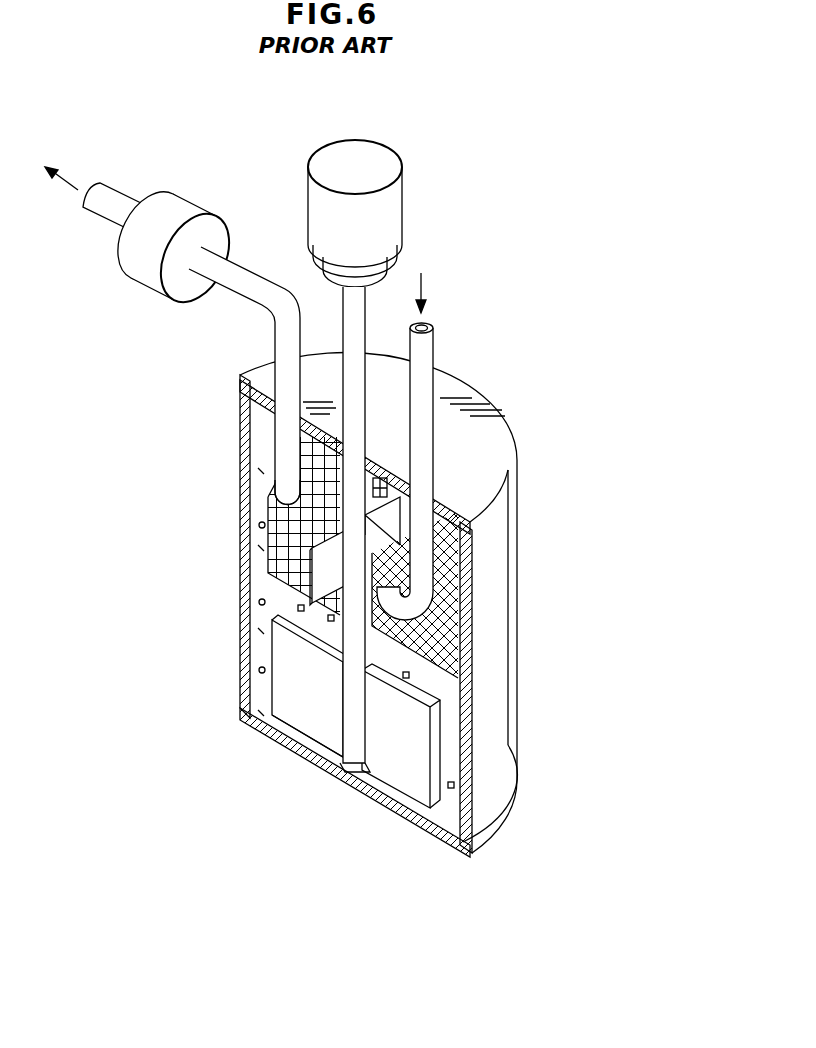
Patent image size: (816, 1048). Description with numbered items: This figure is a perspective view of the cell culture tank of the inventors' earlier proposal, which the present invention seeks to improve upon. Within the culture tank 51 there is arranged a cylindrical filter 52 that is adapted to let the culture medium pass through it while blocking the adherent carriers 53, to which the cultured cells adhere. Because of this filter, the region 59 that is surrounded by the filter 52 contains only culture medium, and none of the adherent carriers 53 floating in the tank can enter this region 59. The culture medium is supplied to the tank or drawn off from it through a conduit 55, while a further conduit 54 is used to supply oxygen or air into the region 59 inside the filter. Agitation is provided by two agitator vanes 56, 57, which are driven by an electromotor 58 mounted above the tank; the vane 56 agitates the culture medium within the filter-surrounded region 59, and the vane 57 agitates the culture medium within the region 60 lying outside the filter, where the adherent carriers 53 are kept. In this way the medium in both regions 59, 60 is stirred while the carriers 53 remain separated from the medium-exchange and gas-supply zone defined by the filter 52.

The culture tank 51 is at (240, 618).
The cylindrical filter 52 is at (277, 510).
The adherent carriers 53 is at (262, 693).
The conduit 54 is at (430, 388).
The conduit 55 is at (260, 305).
The agitator vane 56 is at (300, 592).
The agitator vane 57 is at (422, 787).
The electromotor 58 is at (392, 160).
The region 59 is at (298, 448).
The region 60 is at (297, 733).